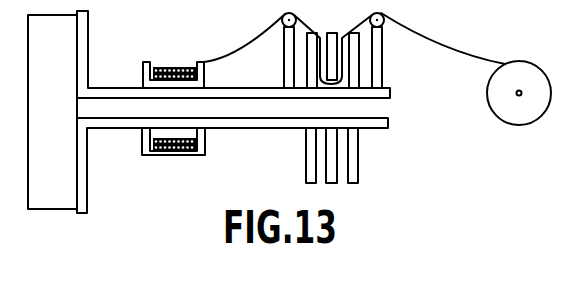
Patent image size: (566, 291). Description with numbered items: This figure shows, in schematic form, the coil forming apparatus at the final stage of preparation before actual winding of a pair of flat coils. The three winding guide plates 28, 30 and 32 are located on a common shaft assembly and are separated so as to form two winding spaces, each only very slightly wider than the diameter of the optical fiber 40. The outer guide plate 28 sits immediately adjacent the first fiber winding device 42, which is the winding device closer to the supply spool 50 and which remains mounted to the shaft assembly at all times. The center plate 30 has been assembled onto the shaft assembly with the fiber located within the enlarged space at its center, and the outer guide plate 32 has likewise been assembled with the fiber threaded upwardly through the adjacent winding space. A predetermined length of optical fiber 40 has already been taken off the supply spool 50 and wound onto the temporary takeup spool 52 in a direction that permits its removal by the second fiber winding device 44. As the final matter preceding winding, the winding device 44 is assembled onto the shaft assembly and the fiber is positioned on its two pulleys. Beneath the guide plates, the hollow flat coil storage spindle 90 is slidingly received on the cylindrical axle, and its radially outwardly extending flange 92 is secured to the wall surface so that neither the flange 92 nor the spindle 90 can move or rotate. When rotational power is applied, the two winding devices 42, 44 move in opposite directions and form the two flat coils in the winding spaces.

The winding guide plate 28 is at (361, 71).
The winding guide plate 30 is at (337, 14).
The winding guide plate 32 is at (311, 72).
The optical fiber 40 is at (458, 51).
The first fiber winding device 42 is at (397, 62).
The second fiber winding device 44 is at (268, 65).
The supply spool 50 is at (519, 117).
The takeup spool 52 is at (148, 62).
The flat coil storage spindle 90 is at (133, 123).
The flange 92 is at (81, 190).